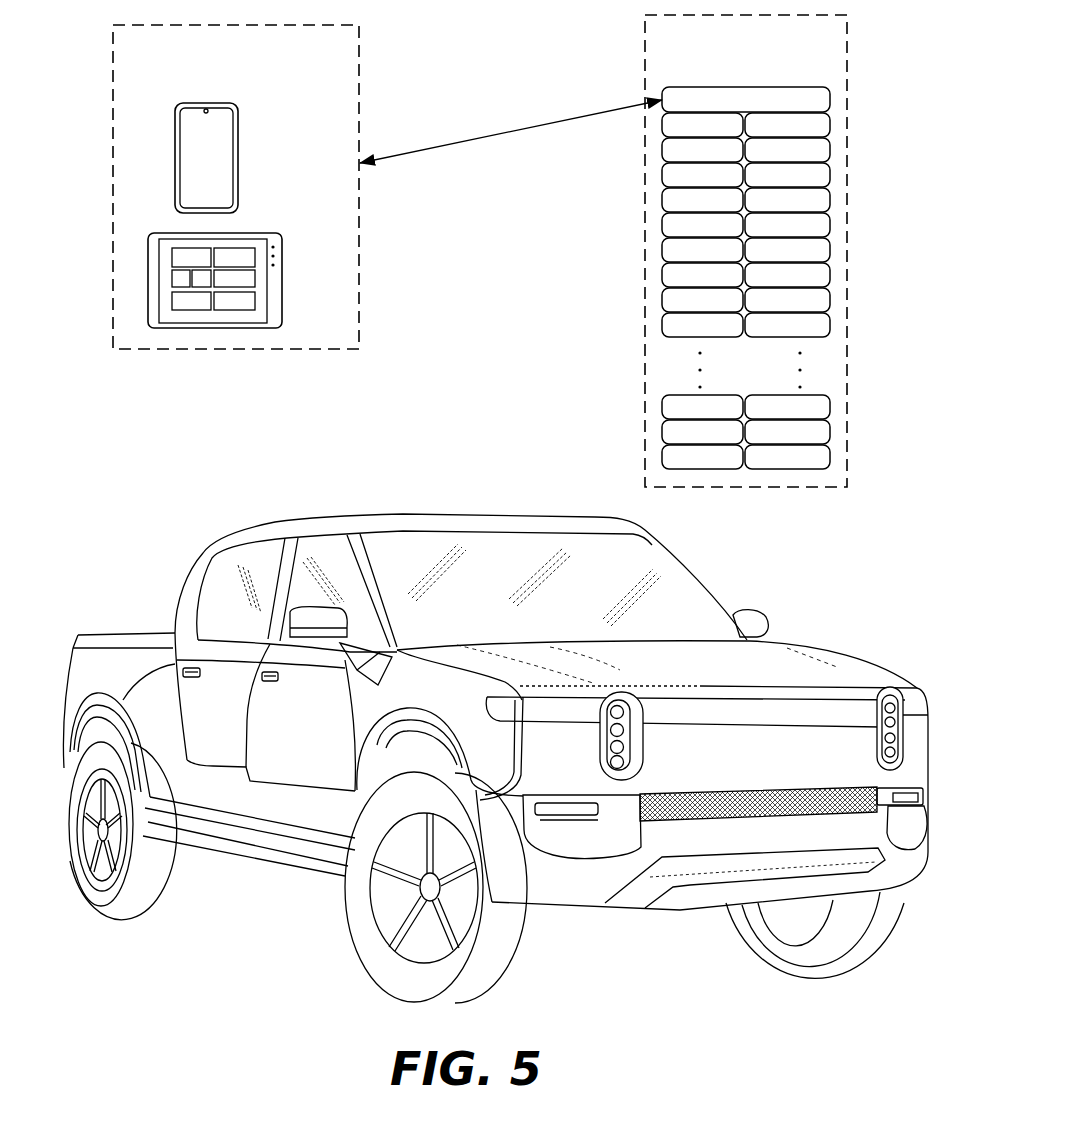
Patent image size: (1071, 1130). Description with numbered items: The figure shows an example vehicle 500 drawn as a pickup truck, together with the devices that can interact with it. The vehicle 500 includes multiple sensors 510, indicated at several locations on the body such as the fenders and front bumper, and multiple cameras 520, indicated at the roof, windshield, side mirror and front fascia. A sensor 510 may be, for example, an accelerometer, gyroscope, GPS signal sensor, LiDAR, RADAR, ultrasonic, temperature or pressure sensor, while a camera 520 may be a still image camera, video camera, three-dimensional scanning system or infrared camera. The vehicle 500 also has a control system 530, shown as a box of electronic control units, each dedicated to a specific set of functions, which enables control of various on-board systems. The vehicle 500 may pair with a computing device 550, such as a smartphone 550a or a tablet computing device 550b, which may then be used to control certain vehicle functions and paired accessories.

The vehicle 500 is at (195, 547).
The sensor 510 is at (68, 745).
The camera 520 is at (787, 770).
The control system 530 is at (695, 663).
The computing device 550 is at (214, 66).
The smartphone 550a is at (238, 158).
The tablet computing device 550b is at (282, 297).